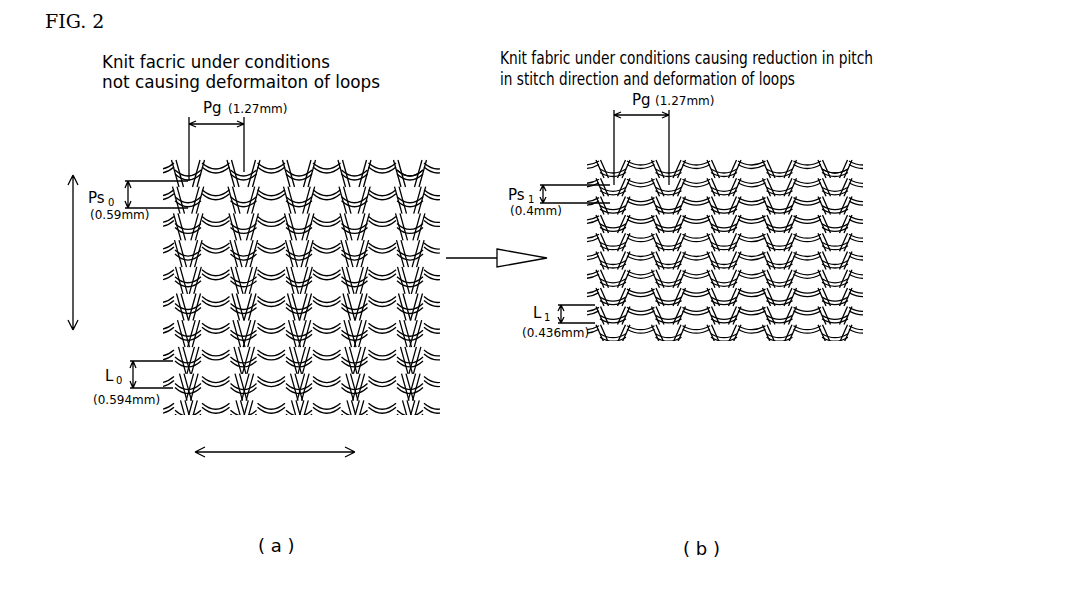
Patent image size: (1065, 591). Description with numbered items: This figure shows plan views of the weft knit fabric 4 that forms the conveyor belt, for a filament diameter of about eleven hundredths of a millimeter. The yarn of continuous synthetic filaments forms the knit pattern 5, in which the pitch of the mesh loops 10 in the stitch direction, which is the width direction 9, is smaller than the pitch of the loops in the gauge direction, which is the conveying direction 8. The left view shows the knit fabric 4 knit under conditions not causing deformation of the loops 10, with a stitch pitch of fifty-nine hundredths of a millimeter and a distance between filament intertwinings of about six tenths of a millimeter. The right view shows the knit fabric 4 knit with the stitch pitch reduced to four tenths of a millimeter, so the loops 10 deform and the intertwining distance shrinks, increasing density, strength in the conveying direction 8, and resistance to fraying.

The weft knit fabric 4 is at (498, 293).
The knit pattern 5 is at (448, 368).
The conveying direction 8 is at (300, 449).
The width direction 9 is at (78, 272).
The loops 10 is at (409, 165).